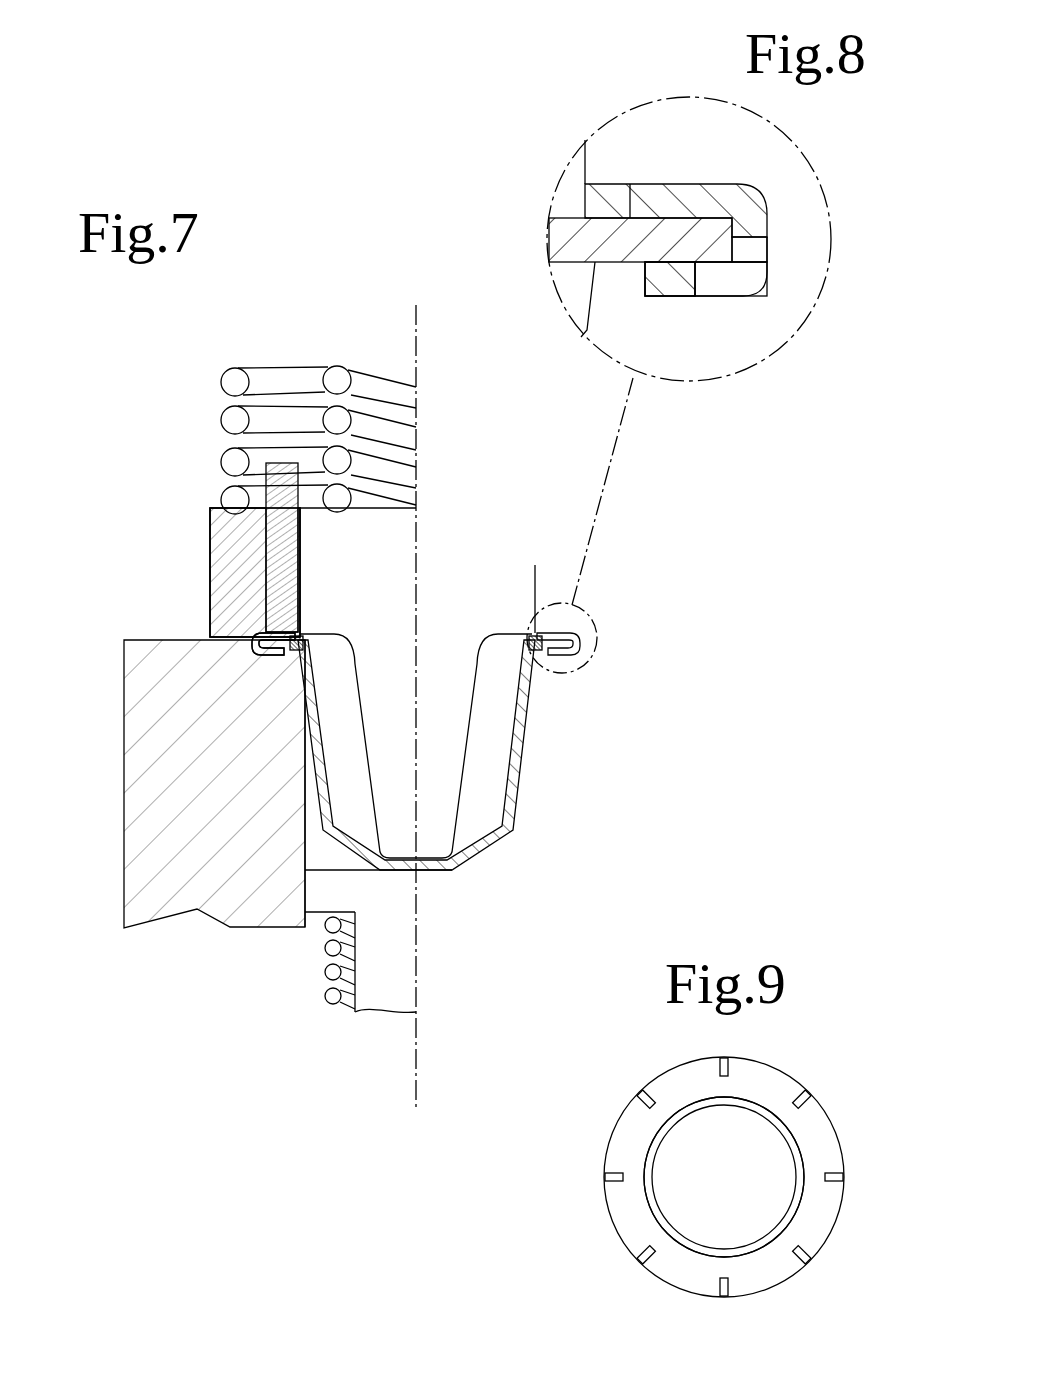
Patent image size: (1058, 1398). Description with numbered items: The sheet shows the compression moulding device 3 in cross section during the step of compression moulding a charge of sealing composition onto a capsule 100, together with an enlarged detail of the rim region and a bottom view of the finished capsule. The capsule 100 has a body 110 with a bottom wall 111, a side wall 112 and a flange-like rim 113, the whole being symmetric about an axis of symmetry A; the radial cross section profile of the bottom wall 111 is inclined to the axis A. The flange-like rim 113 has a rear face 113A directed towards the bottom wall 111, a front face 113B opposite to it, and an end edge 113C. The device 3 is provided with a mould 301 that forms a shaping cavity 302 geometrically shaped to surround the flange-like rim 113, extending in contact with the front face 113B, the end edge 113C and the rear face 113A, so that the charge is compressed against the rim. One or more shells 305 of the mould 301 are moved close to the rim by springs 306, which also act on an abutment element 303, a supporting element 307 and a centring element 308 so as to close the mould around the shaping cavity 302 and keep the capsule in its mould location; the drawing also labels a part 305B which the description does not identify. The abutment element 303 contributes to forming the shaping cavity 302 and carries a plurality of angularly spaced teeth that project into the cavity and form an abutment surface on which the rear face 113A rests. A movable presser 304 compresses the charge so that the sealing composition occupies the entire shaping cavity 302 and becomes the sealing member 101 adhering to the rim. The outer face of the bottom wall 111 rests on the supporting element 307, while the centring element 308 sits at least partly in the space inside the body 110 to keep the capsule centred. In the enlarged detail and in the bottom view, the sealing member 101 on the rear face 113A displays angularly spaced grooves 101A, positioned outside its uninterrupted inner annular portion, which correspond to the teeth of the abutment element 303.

In FIG. 7, the compression moulding device 3 is at (102, 900).
In FIG. 9, the capsule 100 is at (800, 1072).
In FIG. 7, the sealing member 101 is at (268, 654).
In FIG. 8, the sealing member 101 is at (706, 200).
In FIG. 9, the sealing member 101 is at (812, 1145).
In FIG. 8, the grooves 101A is at (740, 280).
In FIG. 9, the grooves 101A is at (833, 1177).
In FIG. 7, the body 110 is at (520, 820).
In FIG. 7, the bottom wall 111 is at (434, 868).
In FIG. 9, the bottom wall 111 is at (697, 1218).
In FIG. 7, the side wall 112 is at (524, 738).
In FIG. 7, the flange-like rim 113 is at (258, 650).
In FIG. 8, the flange-like rim 113 is at (663, 237).
In FIG. 8, the rear face 113A is at (628, 262).
In FIG. 9, the rear face 113A is at (660, 1213).
In FIG. 8, the front face 113B is at (630, 184).
In FIG. 8, the end edge 113C is at (767, 235).
In FIG. 7, the mould 301 is at (250, 633).
In FIG. 7, the shaping cavity 302 is at (282, 632).
In FIG. 7, the abutment element 303 is at (193, 893).
In FIG. 7, the movable presser 304 is at (275, 567).
In FIG. 7, the shells 305 is at (223, 578).
In FIG. 7, the rod 305B is at (248, 543).
In FIG. 7, the springs 306 is at (338, 376).
In FIG. 7, the supporting element 307 is at (382, 993).
In FIG. 7, the centring element 308 is at (463, 782).
In FIG. 8, the centring element 308 is at (575, 173).
In FIG. 7, the axis of symmetry A is at (416, 352).